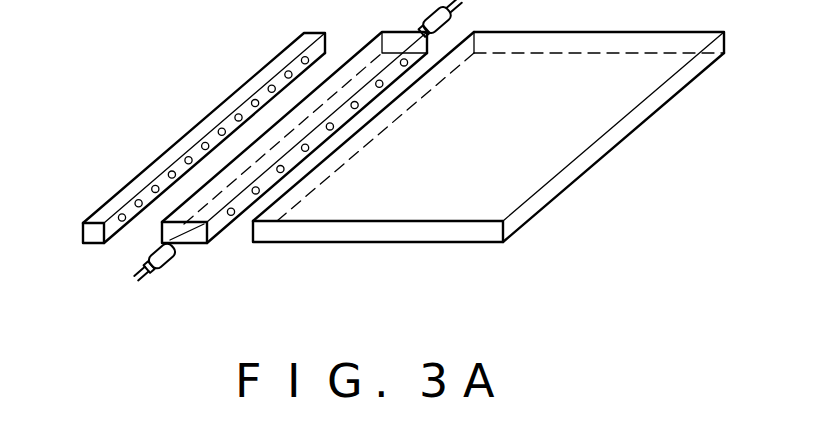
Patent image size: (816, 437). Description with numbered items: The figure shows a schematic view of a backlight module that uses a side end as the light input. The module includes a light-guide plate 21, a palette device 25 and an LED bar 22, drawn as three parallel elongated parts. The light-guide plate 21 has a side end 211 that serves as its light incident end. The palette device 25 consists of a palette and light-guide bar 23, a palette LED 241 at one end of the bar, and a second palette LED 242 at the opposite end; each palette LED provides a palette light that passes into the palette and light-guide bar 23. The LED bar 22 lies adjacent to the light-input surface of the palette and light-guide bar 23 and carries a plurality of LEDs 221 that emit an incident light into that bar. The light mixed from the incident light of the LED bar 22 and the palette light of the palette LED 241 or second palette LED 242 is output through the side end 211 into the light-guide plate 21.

The light-guide plate 21 is at (488, 143).
The side end 211 is at (464, 36).
The LED bar 22 is at (178, 169).
The LEDs 221 is at (118, 226).
The palette and light-guide bar 23 is at (313, 144).
The palette LED 241 is at (174, 262).
The second palette LED 242 is at (422, 17).
The palette device 25 is at (297, 161).